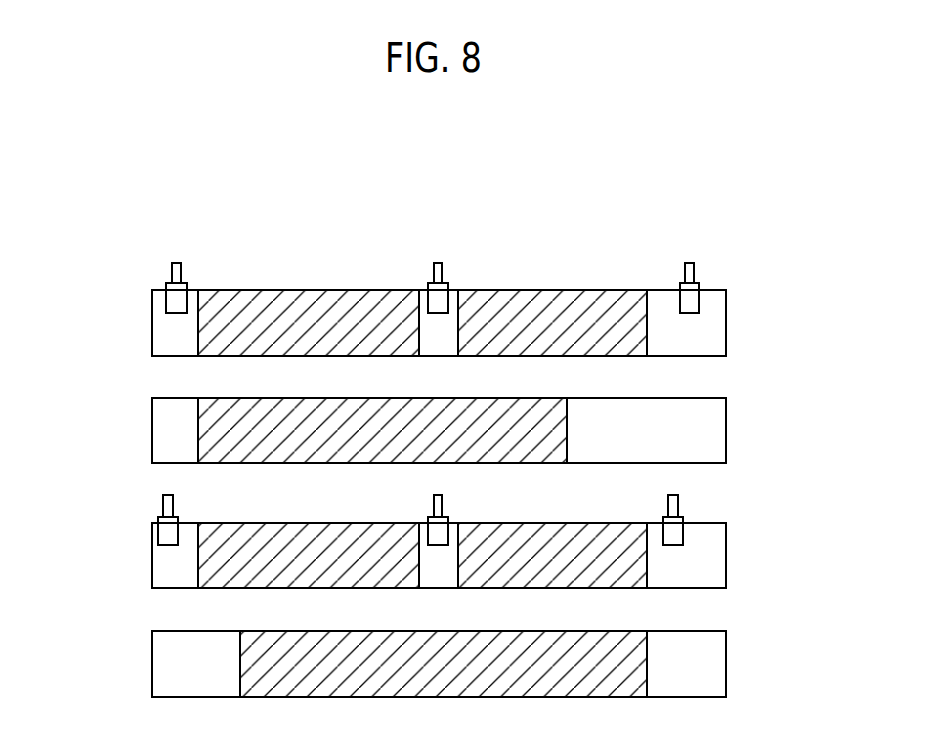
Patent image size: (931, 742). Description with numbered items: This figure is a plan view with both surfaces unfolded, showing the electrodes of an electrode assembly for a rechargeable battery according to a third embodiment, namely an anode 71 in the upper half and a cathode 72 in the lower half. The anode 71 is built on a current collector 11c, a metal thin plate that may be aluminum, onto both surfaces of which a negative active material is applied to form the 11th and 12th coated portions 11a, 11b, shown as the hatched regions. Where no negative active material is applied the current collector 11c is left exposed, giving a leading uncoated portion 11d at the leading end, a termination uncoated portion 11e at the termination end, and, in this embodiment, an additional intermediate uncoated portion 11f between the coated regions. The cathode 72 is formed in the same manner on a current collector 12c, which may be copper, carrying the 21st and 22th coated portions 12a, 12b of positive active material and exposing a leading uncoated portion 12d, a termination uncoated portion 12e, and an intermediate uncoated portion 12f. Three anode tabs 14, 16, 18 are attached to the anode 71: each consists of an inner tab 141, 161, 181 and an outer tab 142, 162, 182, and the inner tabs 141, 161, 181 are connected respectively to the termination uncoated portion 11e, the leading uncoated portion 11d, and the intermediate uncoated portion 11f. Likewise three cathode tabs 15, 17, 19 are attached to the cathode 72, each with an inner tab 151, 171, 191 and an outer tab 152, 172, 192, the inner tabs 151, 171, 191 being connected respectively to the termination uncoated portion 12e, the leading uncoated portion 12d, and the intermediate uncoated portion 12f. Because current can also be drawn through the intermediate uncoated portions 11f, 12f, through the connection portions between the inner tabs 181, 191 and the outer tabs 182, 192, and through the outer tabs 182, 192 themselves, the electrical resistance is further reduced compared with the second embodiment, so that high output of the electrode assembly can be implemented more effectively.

The anode 71 is at (101, 290).
The cathode 72 is at (101, 523).
The 11th coated portion 11a is at (517, 296).
The 12th coated portion 11b is at (517, 406).
The current collector 11c is at (152, 398).
The leading uncoated portion 11d is at (178, 412).
The termination uncoated portion 11e is at (697, 406).
The intermediate uncoated portion 11f is at (436, 348).
The 21st coated portion 12a is at (517, 532).
The 22th coated portion 12b is at (517, 640).
The current collector 12c is at (152, 631).
The leading uncoated portion 12d is at (178, 645).
The termination uncoated portion 12e is at (697, 640).
The intermediate uncoated portion 12f is at (436, 582).
The anode tab 14 is at (607, 232).
The inner tab 141 is at (682, 296).
The outer tab 142 is at (688, 264).
The cathode tab 15 is at (775, 472).
The inner tab 151 is at (683, 535).
The outer tab 152 is at (678, 502).
The anode tab 16 is at (104, 232).
The inner tab 161 is at (166, 297).
The outer tab 162 is at (175, 264).
The cathode tab 17 is at (113, 480).
The inner tab 171 is at (160, 529).
The outer tab 172 is at (165, 497).
The anode tab 18 is at (368, 232).
The inner tab 181 is at (430, 296).
The outer tab 182 is at (437, 264).
The cathode tab 19 is at (373, 470).
The inner tab 191 is at (432, 528).
The outer tab 192 is at (437, 496).